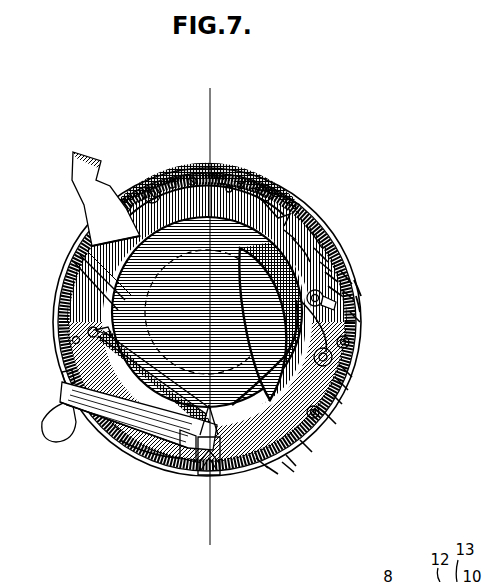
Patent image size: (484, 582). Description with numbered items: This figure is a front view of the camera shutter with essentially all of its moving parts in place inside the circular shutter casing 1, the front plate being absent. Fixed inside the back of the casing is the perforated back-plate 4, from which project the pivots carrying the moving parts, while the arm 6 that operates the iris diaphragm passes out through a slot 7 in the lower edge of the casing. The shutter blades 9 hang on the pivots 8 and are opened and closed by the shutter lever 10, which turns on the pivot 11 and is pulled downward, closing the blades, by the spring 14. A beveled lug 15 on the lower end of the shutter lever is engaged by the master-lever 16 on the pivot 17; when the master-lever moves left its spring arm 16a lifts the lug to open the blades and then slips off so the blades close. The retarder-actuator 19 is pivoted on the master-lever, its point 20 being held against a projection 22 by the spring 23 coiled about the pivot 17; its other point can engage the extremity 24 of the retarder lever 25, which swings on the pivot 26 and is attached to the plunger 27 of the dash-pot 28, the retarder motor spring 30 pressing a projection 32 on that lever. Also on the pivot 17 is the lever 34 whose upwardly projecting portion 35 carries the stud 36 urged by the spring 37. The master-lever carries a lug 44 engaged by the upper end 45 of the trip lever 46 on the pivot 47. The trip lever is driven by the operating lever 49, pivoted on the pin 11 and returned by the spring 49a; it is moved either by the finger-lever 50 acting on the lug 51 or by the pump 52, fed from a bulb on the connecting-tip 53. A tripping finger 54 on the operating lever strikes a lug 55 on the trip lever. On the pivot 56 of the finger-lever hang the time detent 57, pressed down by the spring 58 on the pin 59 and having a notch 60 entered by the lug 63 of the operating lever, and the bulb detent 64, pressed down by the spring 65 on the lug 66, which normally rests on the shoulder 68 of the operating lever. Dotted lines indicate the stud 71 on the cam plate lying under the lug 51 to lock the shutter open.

The shutter casing 1 is at (53, 326).
The back-plate 4 is at (59, 292).
The arm 6 is at (205, 486).
The slot 7 is at (170, 466).
The pivots 8 is at (210, 317).
The shutter blades 9 is at (118, 262).
The shutter lever 10 is at (300, 168).
The pivot 11 is at (278, 198).
The spring 14 is at (272, 230).
The lug 15 is at (302, 240).
The master-lever 16 is at (349, 385).
The spring arm 16a is at (332, 276).
The pivot 17 is at (352, 371).
The retarder-actuator 19 is at (344, 397).
The point 20 is at (305, 450).
The projection 22 is at (291, 465).
The spring 23 is at (352, 356).
The extremity 24 is at (263, 466).
The retarder lever 25 is at (115, 433).
The pivot 26 is at (191, 470).
The plunger 27 is at (63, 336).
The dash-pot 28 is at (105, 272).
The spring 30 is at (165, 424).
The projection 32 is at (66, 378).
The lever 34 is at (362, 302).
The upwardly projecting portion 35 is at (362, 287).
The stud 36 is at (350, 295).
The spring 37 is at (350, 341).
The lug 44 is at (346, 278).
The upper end 45 is at (336, 291).
The trip lever 46 is at (321, 430).
The pivot 47 is at (336, 424).
The operating lever 49 is at (271, 472).
The spring 49a is at (292, 236).
The finger-lever 50 is at (74, 171).
The lug 51 is at (130, 232).
The pump 52 is at (105, 425).
The connecting-tip 53 is at (48, 437).
The tripping finger 54 is at (345, 308).
The lug 55 is at (357, 322).
The pivot 56 is at (150, 186).
The time detent 57 is at (312, 236).
The spring 58 is at (172, 180).
The pin 59 is at (192, 177).
The notch 60 is at (322, 256).
The lug 63 is at (327, 266).
The bulb detent 64 is at (243, 182).
The spring 65 is at (222, 176).
The lug 66 is at (230, 186).
The shoulder 68 is at (266, 185).
The stud 71 is at (129, 205).